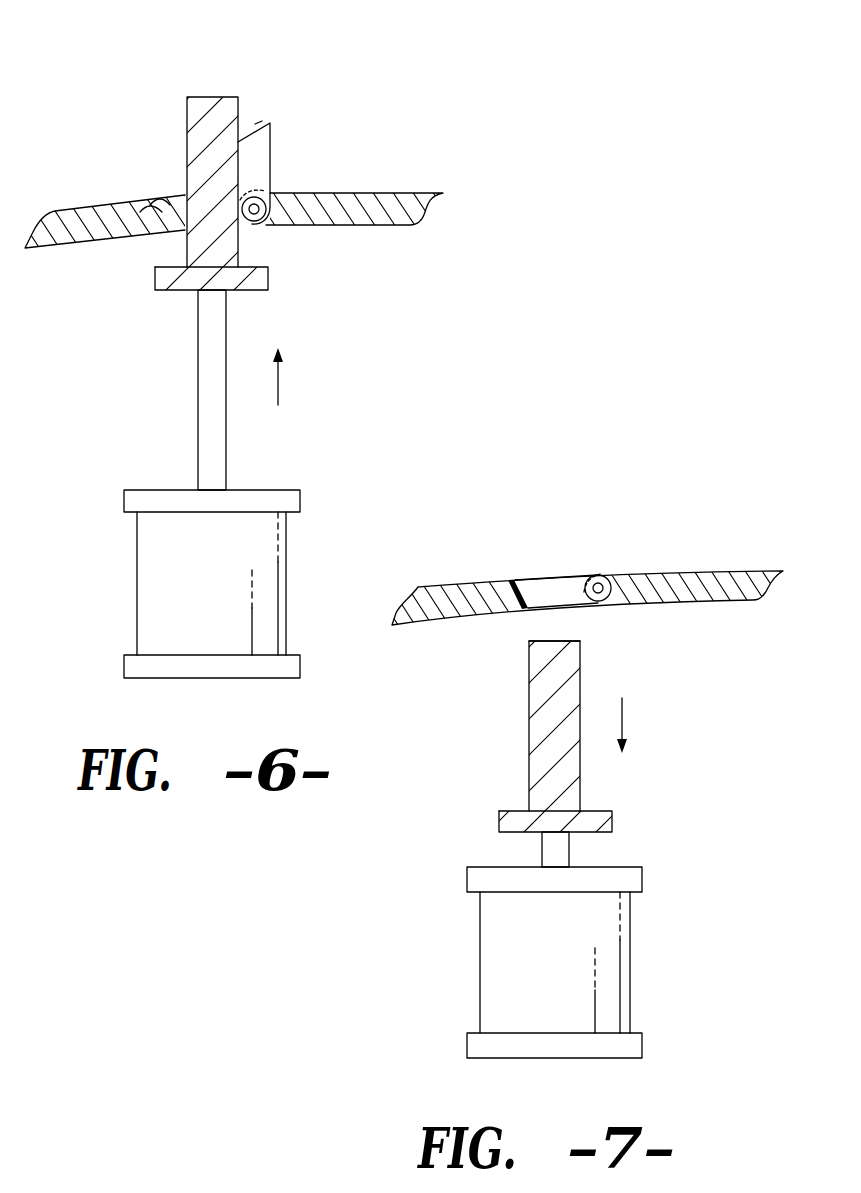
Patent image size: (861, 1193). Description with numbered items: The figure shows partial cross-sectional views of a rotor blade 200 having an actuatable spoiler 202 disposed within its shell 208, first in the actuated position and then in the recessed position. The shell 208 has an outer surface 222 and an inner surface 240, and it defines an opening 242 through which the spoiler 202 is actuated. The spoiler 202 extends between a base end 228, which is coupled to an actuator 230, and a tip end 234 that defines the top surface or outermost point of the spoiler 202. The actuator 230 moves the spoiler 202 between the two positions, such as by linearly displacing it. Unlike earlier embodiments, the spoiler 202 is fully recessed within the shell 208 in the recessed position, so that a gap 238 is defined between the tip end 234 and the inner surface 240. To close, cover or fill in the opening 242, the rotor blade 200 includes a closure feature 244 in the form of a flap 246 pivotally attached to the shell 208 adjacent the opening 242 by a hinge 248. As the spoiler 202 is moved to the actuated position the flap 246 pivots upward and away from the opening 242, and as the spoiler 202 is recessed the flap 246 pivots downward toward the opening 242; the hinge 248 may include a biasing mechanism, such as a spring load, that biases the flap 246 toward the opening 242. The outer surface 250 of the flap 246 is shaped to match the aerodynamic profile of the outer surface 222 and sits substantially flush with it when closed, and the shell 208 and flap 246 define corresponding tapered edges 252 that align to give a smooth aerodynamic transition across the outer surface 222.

In FIG. 6, the rotor blade 200 is at (443, 84).
In FIG. 7, the rotor blade 200 is at (713, 469).
In FIG. 6, the spoiler 202 is at (230, 159).
In FIG. 7, the spoiler 202 is at (547, 724).
In FIG. 6, the shell 208 is at (381, 176).
In FIG. 7, the shell 208 is at (596, 572).
In FIG. 6, the outer surface 222 is at (378, 190).
In FIG. 7, the outer surface 222 is at (690, 570).
In FIG. 6, the base end 228 is at (272, 272).
In FIG. 7, the base end 228 is at (614, 828).
In FIG. 6, the actuator 230 is at (137, 600).
In FIG. 7, the actuator 230 is at (480, 970).
In FIG. 6, the tip end 234 is at (187, 128).
In FIG. 7, the tip end 234 is at (565, 634).
In FIG. 7, the gap 238 is at (548, 628).
In FIG. 6, the inner surface 240 is at (100, 240).
In FIG. 7, the inner surface 240 is at (700, 607).
In FIG. 6, the opening 242 is at (178, 205).
In FIG. 6, the closure feature 244 is at (314, 180).
In FIG. 7, the closure feature 244 is at (554, 538).
In FIG. 6, the flap 246 is at (271, 142).
In FIG. 7, the flap 246 is at (554, 573).
In FIG. 6, the hinge 248 is at (257, 227).
In FIG. 7, the hinge 248 is at (583, 573).
In FIG. 6, the outer surface of the flap 250 is at (275, 182).
In FIG. 7, the outer surface of the flap 250 is at (527, 575).
In FIG. 6, the tapered edges 252 is at (158, 210).
In FIG. 7, the tapered edges 252 is at (512, 595).